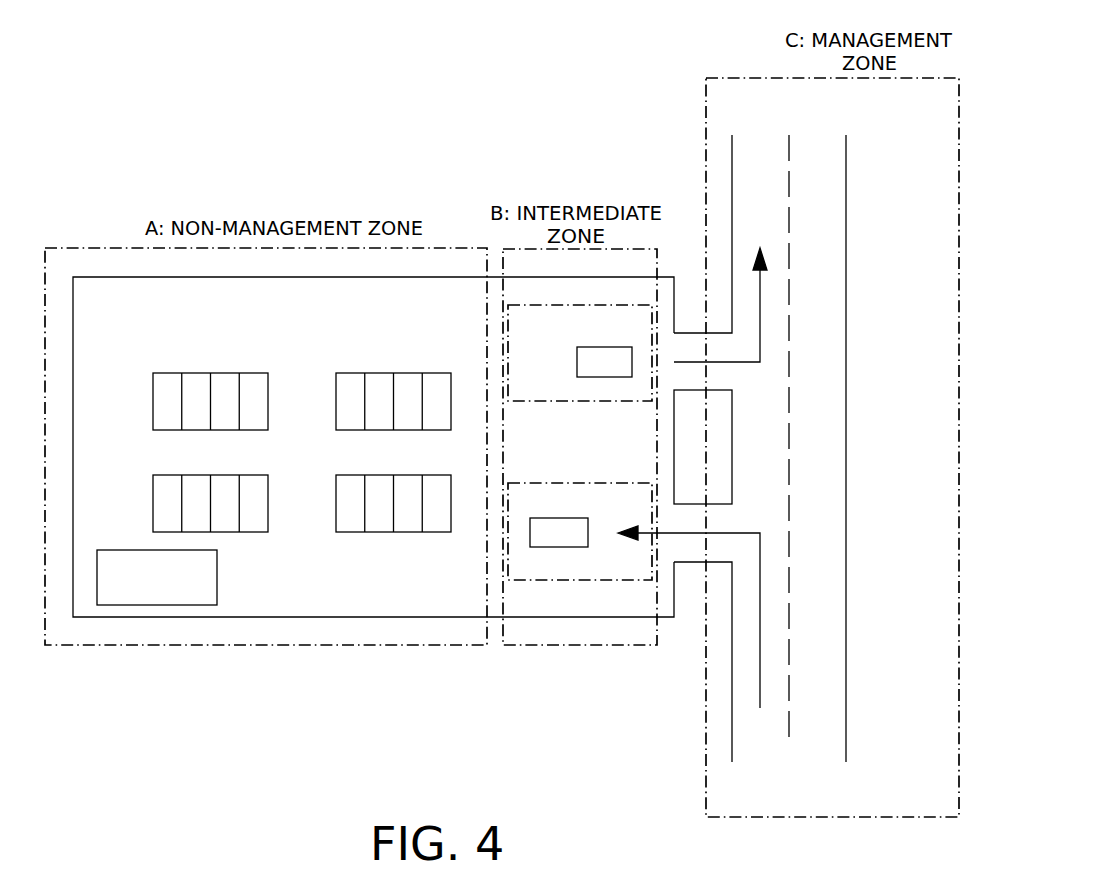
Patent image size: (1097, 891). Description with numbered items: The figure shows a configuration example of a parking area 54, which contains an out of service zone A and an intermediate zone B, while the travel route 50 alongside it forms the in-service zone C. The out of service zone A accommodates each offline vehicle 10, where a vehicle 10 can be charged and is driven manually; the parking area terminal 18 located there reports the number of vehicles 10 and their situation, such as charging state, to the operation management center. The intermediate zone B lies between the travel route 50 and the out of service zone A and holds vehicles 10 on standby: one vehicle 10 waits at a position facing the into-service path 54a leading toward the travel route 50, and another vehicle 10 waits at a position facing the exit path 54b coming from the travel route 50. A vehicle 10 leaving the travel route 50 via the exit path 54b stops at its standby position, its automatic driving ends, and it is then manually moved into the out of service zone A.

The vehicle 10 is at (605, 377).
The parking area terminal 18 is at (167, 605).
The travel route 50 is at (846, 503).
The parking area 54 is at (432, 617).
The into-service path 54a is at (692, 562).
The exit path 54b is at (697, 333).